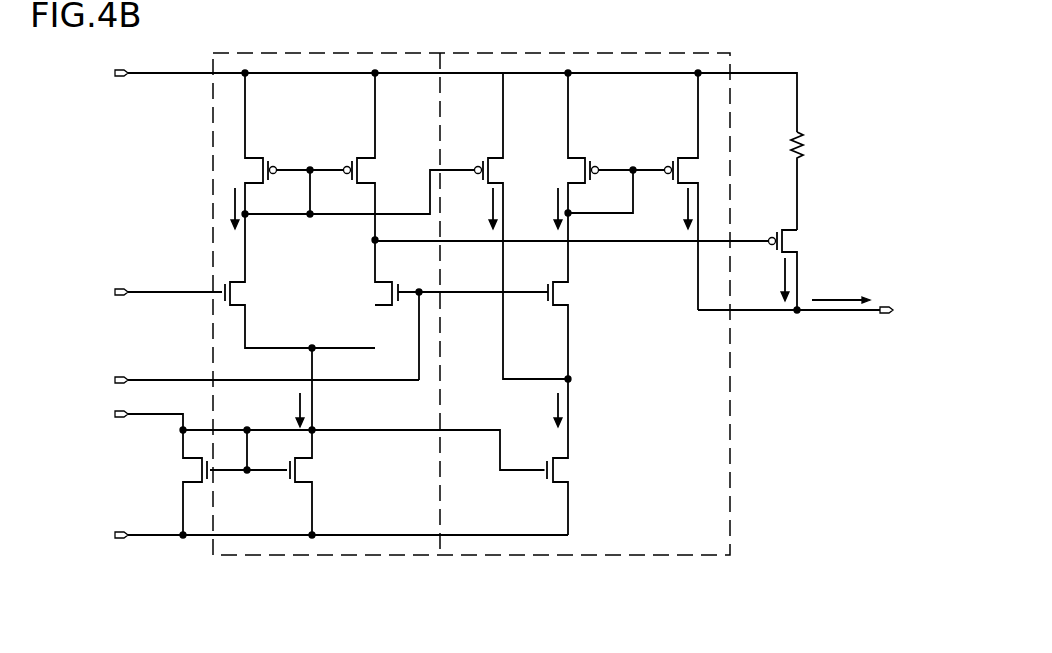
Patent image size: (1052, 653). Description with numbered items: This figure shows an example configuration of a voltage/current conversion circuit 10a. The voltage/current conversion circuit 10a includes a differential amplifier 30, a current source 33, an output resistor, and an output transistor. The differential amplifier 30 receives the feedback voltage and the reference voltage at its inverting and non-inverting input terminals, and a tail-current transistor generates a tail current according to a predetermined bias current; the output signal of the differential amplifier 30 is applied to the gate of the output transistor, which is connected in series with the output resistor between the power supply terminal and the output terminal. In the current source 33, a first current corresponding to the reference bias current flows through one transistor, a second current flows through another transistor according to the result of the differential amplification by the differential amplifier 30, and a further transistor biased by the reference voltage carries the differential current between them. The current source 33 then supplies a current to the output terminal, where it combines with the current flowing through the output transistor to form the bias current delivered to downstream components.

The voltage/current conversion circuit 10a is at (500, 630).
The differential amplifier 30 is at (335, 555).
The current source 33 is at (645, 555).